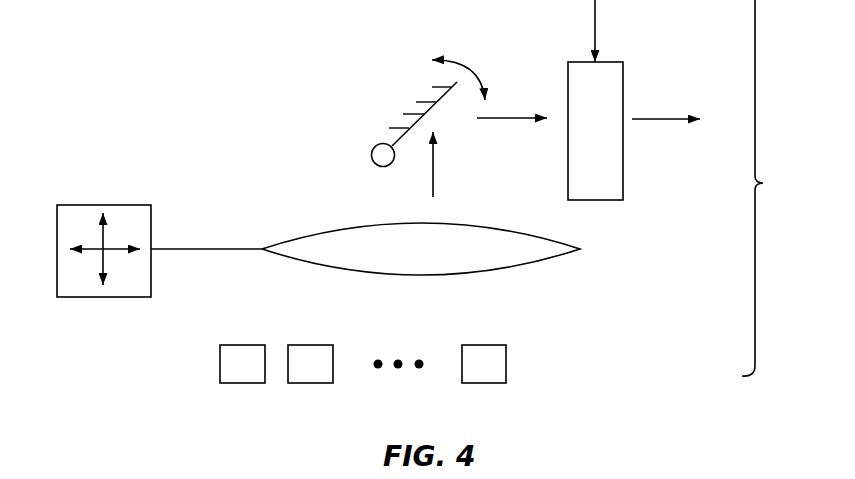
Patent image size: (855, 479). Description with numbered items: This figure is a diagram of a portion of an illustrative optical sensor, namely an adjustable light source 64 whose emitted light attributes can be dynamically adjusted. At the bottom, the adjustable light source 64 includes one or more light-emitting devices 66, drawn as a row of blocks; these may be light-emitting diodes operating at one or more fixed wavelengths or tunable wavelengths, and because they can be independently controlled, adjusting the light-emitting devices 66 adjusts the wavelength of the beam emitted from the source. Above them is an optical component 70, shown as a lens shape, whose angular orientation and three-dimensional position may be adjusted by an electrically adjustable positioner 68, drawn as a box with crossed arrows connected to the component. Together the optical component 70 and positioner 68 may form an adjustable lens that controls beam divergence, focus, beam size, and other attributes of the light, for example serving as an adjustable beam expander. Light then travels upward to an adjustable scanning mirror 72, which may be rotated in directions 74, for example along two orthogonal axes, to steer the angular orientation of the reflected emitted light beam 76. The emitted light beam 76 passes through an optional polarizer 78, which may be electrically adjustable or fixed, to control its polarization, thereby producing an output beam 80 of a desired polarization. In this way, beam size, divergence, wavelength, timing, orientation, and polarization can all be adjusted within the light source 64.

The adjustable light source 64 is at (771, 188).
The light-emitting devices 66 is at (320, 355).
The electrically adjustable positioner 68 is at (107, 298).
The optical component 70 is at (580, 248).
The adjustable scanning mirror 72 is at (370, 127).
The directions 74 is at (464, 60).
The emitted light beam 76 is at (508, 122).
The polarizer 78 is at (623, 173).
The output beam 80 is at (662, 118).